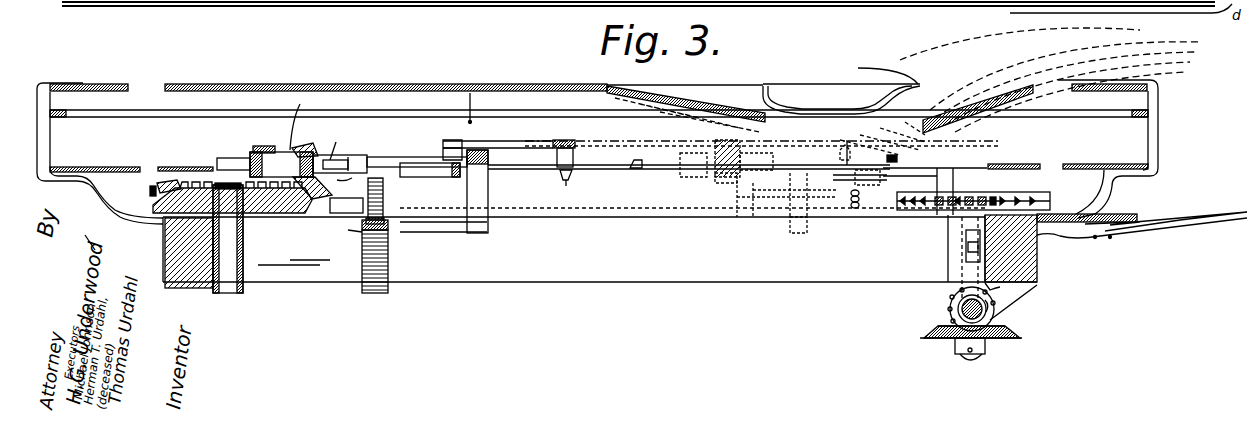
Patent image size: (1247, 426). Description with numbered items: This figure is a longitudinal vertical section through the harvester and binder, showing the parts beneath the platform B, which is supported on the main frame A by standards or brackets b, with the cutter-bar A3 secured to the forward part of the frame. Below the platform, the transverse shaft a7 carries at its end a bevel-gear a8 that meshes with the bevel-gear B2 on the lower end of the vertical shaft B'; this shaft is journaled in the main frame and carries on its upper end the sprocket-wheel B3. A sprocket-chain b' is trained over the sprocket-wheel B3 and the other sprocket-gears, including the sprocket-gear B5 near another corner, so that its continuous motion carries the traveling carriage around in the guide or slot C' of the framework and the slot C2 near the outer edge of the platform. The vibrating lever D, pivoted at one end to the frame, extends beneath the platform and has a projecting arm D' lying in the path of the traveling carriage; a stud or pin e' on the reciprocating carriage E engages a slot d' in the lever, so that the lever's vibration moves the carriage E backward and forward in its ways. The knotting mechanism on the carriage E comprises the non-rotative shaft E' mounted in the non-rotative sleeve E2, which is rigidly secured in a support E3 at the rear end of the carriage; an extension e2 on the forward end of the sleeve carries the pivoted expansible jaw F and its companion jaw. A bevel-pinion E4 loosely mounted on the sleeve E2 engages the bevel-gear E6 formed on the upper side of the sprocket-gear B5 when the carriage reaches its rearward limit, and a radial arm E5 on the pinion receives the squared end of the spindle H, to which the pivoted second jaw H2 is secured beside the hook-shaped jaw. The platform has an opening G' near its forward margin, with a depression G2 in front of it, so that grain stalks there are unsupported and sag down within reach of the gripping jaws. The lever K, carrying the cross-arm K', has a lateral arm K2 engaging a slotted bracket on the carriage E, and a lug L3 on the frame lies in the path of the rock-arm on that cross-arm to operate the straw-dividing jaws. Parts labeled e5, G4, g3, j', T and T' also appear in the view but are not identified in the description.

The main frame A is at (600, 257).
The cutter-bar A3 is at (1200, 216).
The platform B is at (883, 69).
The vertical shaft B' is at (970, 361).
The bevel-gear B2 is at (1018, 336).
The sprocket-wheel B3 is at (1045, 198).
The sprocket-gear B5 is at (290, 205).
The standards or brackets b is at (1168, 136).
The sprocket-chain b' is at (596, 197).
The guide or slot C' is at (599, 158).
The slot C2 is at (165, 84).
The vibrating lever D is at (313, 238).
The projecting arm D' is at (483, 174).
The slot d' is at (347, 230).
The carriage E is at (443, 197).
The non-rotative shaft E' is at (232, 152).
The non-rotative sleeve E2 is at (281, 164).
The support E3 is at (276, 148).
The bevel-pinion E4 is at (306, 146).
The radial arm E5 is at (296, 254).
The bevel-gear E6 is at (170, 182).
The stud or pin e' is at (385, 209).
The extension e2 is at (342, 160).
The spring e5 is at (299, 121).
The expansible jaw F is at (350, 160).
The opening G' is at (841, 83).
The depression G2 is at (1020, 91).
The guide plate G4 is at (476, 95).
The lug g3 is at (637, 160).
The spindle H is at (567, 186).
The second jaw H2 is at (445, 142).
The spring j' is at (375, 198).
The lever K is at (573, 142).
The cross-arm K' is at (417, 144).
The lateral arm K2 is at (536, 140).
The lug L3 is at (900, 159).
The valve T is at (856, 164).
The valve casing T' is at (758, 178).
The transverse shaft a7 is at (1011, 301).
The bevel-gear a8 is at (950, 309).